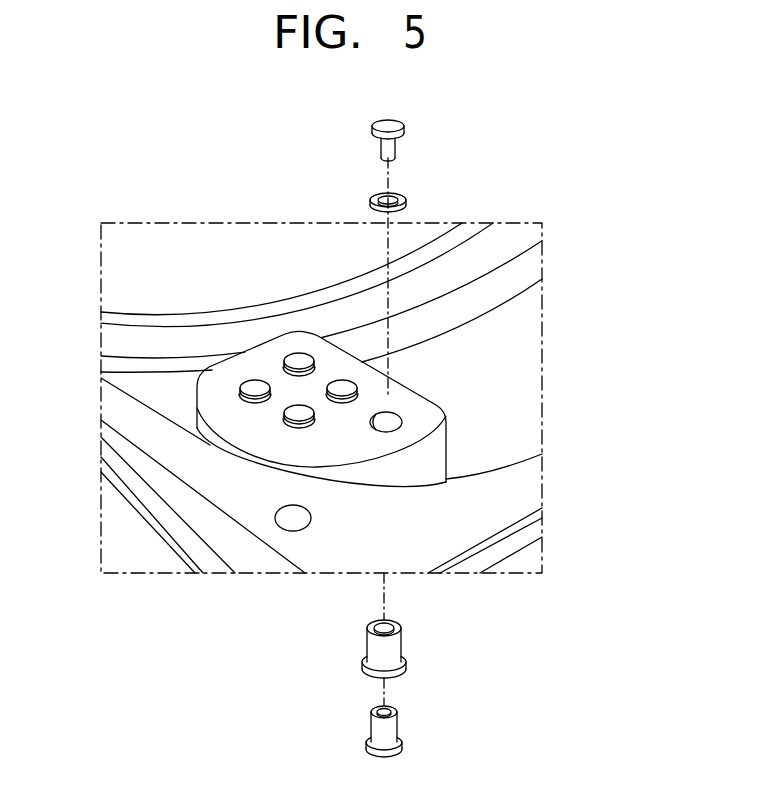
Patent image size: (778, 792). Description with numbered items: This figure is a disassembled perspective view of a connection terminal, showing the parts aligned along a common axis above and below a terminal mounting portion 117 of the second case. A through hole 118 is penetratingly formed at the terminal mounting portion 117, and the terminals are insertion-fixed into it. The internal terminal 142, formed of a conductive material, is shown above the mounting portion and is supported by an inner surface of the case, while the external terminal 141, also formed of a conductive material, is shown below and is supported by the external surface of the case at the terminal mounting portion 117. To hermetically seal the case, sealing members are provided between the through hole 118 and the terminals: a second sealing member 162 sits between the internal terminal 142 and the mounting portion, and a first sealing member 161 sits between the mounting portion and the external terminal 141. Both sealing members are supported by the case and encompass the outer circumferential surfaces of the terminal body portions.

The terminal mounting portion 117 is at (220, 397).
The through hole 118 is at (390, 418).
The internal terminal 142 is at (405, 128).
The second sealing member 162 is at (407, 202).
The first sealing member 161 is at (401, 642).
The external terminal 141 is at (397, 727).